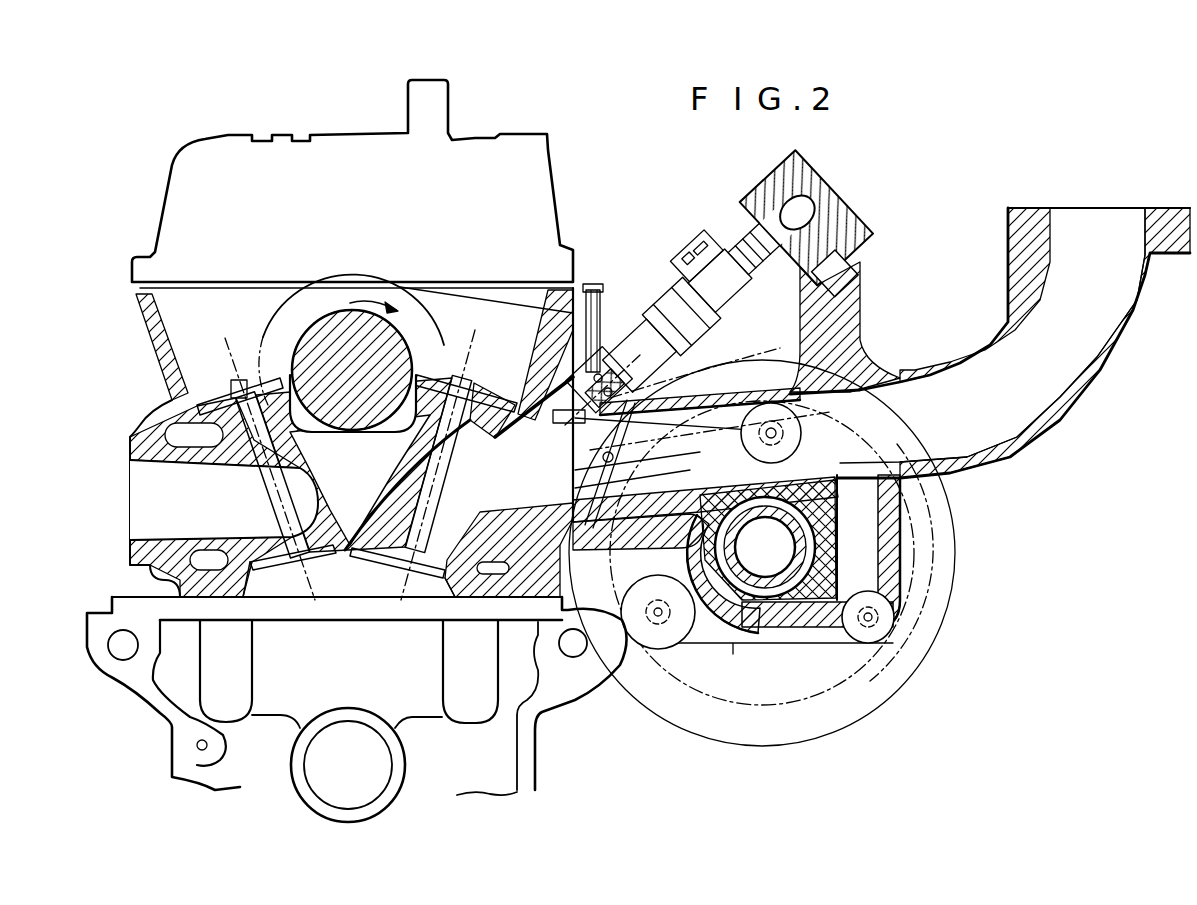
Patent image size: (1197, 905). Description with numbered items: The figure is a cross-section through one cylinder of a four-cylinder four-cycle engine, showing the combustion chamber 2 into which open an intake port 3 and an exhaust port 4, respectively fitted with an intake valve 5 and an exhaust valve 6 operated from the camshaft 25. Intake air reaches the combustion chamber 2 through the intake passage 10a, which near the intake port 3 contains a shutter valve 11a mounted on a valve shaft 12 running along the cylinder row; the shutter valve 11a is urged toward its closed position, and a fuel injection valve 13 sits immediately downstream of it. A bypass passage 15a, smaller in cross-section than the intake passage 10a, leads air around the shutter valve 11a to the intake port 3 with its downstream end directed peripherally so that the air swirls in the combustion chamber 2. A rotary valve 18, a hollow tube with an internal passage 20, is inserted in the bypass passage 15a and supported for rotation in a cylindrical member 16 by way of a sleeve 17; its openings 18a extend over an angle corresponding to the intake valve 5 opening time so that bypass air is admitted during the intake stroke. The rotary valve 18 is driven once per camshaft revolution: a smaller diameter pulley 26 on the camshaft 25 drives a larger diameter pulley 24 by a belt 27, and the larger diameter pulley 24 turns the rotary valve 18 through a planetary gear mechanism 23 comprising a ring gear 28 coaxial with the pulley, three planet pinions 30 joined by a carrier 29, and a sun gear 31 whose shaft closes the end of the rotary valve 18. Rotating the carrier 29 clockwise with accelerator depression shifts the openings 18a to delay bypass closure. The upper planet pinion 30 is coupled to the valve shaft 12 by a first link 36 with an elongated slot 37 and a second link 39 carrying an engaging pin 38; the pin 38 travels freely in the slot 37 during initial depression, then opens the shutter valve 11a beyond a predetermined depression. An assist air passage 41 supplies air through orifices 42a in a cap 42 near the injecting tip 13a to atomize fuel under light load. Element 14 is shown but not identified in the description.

The combustion chamber 2 is at (350, 588).
The intake port 3 is at (468, 511).
The exhaust port 4 is at (142, 502).
The intake valve 5 is at (398, 606).
The exhaust valve 6 is at (237, 375).
The intake passage 10a is at (1066, 383).
The shutter valve 11a is at (614, 462).
The valve shaft 12 is at (570, 463).
The fuel injection valve 13 is at (708, 197).
The injecting tip 13a is at (613, 365).
The actuating lever 14 is at (572, 488).
The bypass passage 15a is at (445, 620).
The cylindrical member 16 is at (735, 643).
The sleeve 17 is at (835, 556).
The rotary valve 18 is at (775, 608).
The openings 18a is at (880, 527).
The passage 20 is at (795, 633).
The planetary gear mechanism 23 is at (893, 718).
The larger diameter pulley 24 is at (958, 543).
The camshaft 25 is at (337, 293).
The smaller diameter pulley 26 is at (372, 292).
The belt 27 is at (636, 335).
The ring gear 28 is at (926, 610).
The carrier 29 is at (732, 645).
The planet pinions 30 is at (814, 428).
The sun gear 31 is at (762, 640).
The first link 36 is at (735, 448).
The elongated slot 37 is at (558, 440).
The engaging pin 38 is at (545, 392).
The second link 39 is at (576, 465).
The assist air passage 41 is at (592, 292).
The cap 42 is at (716, 352).
The orifices 42a is at (538, 312).